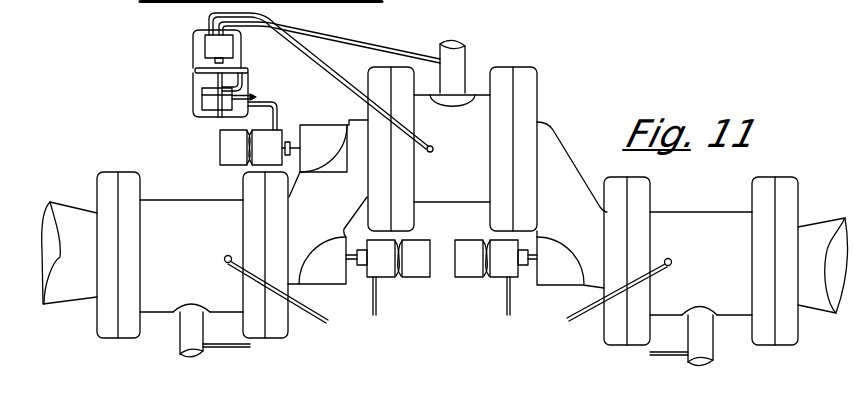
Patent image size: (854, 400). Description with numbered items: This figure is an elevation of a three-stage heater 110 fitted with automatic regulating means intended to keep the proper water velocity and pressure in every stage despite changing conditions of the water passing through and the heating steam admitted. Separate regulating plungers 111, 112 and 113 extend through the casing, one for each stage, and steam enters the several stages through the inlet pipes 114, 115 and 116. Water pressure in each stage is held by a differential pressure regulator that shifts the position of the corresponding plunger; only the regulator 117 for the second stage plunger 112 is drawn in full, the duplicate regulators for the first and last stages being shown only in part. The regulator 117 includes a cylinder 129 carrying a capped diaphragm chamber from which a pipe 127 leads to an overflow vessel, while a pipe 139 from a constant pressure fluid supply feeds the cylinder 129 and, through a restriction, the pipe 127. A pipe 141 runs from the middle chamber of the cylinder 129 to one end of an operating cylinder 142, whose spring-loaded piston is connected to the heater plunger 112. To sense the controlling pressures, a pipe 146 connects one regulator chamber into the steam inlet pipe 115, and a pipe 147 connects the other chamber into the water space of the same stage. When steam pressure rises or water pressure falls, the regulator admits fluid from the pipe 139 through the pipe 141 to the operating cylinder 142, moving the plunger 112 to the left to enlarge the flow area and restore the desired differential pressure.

The three-stage heater 110 is at (563, 160).
The regulating plunger 111 is at (350, 263).
The second stage plunger 112 is at (297, 126).
The regulating plunger 113 is at (529, 268).
The inlet pipe 114 is at (185, 343).
The steam inlet pipe 115 is at (458, 63).
The inlet pipe 116 is at (713, 350).
The regulator 117 is at (196, 62).
The pipe 127 is at (243, 78).
The cylinder 129 is at (207, 102).
The pipe 139 is at (258, 92).
The pipe 141 is at (279, 128).
The operating cylinder 142 is at (233, 157).
The pipe 146 is at (340, 41).
The pipe 147 is at (351, 84).